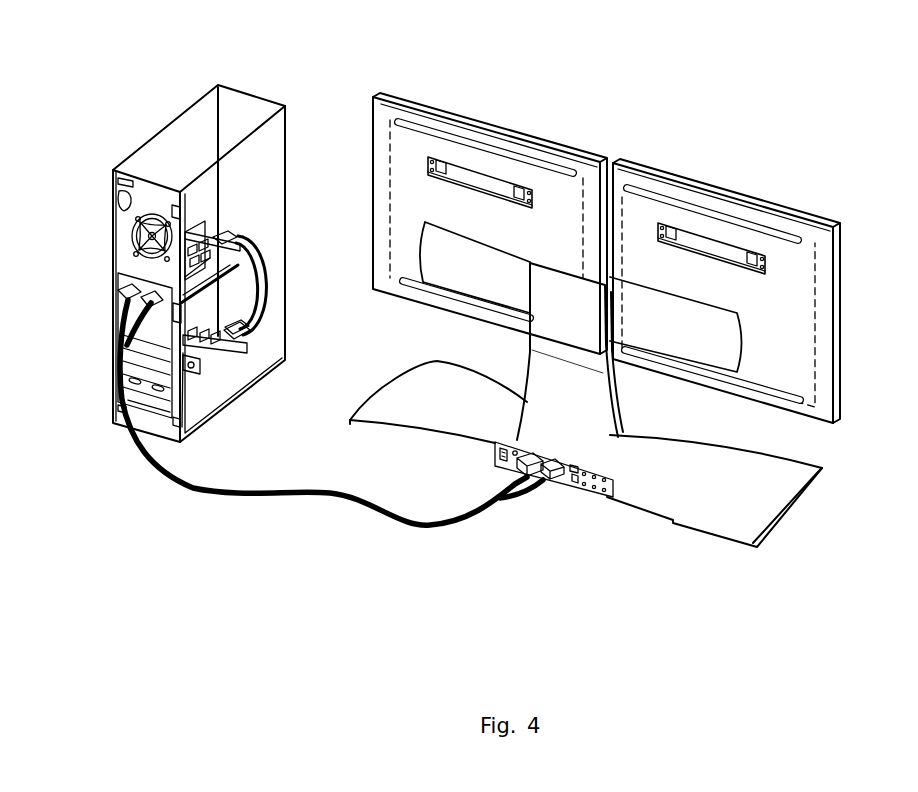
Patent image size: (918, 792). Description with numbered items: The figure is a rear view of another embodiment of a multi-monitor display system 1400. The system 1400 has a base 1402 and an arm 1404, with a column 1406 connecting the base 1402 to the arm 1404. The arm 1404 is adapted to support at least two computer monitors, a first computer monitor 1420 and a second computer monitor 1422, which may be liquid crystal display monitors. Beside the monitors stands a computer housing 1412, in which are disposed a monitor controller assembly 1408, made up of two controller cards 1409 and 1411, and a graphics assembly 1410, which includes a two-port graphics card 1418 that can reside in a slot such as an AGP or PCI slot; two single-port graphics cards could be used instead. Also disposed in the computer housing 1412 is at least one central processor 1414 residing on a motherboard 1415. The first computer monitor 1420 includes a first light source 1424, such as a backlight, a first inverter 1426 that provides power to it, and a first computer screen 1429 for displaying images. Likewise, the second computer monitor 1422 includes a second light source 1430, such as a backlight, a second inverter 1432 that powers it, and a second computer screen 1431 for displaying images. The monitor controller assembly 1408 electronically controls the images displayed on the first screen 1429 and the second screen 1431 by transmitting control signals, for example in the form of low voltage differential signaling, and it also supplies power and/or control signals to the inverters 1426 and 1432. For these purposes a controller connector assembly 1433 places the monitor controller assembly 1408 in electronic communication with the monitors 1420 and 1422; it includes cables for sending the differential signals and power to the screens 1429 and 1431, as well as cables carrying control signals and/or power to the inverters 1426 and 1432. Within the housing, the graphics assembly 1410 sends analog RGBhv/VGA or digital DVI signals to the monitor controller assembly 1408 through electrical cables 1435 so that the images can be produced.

The multi-monitor display system 1400 is at (684, 66).
The base 1402 is at (728, 492).
The arm 1404 is at (684, 338).
The column 1406 is at (583, 325).
The monitor controller assembly 1408 is at (213, 237).
The controller card 1409 is at (222, 237).
The graphics assembly 1410 is at (238, 359).
The controller card 1411 is at (233, 240).
The computer housing 1412 is at (215, 108).
The central processor 1414 is at (153, 236).
The motherboard 1415 is at (192, 317).
The two-port graphics card 1418 is at (214, 357).
The first computer monitor 1420 is at (844, 270).
The second computer monitor 1422 is at (368, 104).
The first light source 1424 is at (743, 223).
The first inverter 1426 is at (697, 247).
The first computer screen 1429 is at (787, 272).
The second light source 1430 is at (553, 167).
The second computer screen 1431 is at (408, 145).
The second inverter 1432 is at (488, 187).
The controller connector assembly 1433 is at (282, 502).
The electrical cables 1435 is at (270, 282).